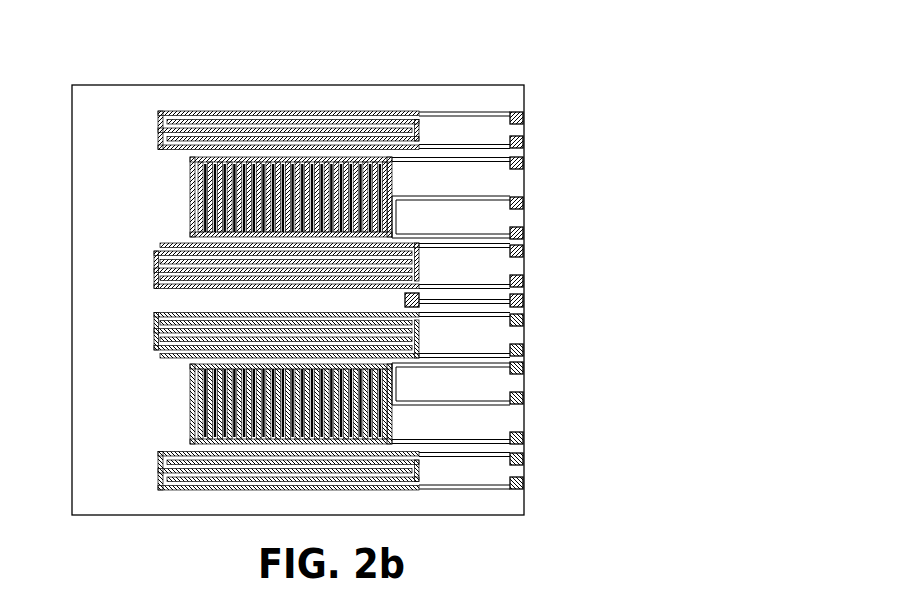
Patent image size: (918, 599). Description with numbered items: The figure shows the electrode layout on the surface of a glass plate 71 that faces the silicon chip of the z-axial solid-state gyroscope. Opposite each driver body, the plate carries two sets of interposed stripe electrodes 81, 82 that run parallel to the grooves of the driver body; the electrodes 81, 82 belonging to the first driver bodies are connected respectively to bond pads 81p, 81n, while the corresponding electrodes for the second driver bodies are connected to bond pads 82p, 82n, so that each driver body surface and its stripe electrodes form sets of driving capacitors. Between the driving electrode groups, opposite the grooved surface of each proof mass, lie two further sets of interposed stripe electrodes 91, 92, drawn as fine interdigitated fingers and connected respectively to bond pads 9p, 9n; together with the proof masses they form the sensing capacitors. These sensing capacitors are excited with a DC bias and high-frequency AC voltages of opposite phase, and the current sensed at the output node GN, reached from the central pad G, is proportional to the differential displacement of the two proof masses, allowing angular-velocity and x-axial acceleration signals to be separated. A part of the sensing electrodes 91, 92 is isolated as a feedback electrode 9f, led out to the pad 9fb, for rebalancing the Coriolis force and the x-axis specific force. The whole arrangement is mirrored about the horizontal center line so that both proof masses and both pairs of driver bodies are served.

The semiconductor chip / substrate 71 is at (81, 246).
The stripe electrodes 81 is at (249, 132).
The stripe electrodes 82 is at (199, 138).
The stripe electrodes 91 is at (200, 185).
The stripe electrodes 92 is at (193, 218).
The feedback electrode 9f is at (192, 170).
The bond pad 81p is at (523, 118).
The bond pad 81n is at (523, 142).
The bond pad 82p is at (523, 251).
The bond pad 82n is at (523, 281).
The frame bus terminal 9fb is at (523, 163).
The bond pad 9n is at (523, 203).
The bond pad 9p is at (523, 233).
The gate pad G is at (405, 300).
The output node GN is at (523, 300).